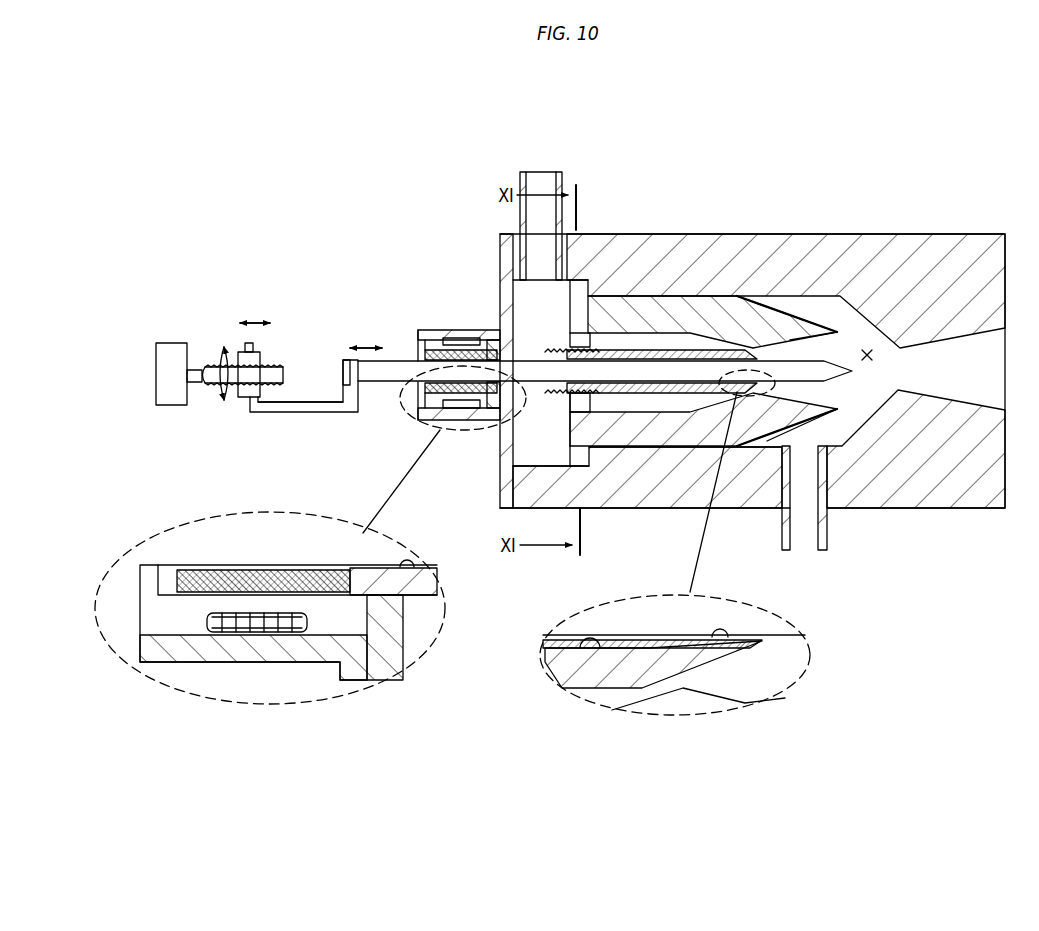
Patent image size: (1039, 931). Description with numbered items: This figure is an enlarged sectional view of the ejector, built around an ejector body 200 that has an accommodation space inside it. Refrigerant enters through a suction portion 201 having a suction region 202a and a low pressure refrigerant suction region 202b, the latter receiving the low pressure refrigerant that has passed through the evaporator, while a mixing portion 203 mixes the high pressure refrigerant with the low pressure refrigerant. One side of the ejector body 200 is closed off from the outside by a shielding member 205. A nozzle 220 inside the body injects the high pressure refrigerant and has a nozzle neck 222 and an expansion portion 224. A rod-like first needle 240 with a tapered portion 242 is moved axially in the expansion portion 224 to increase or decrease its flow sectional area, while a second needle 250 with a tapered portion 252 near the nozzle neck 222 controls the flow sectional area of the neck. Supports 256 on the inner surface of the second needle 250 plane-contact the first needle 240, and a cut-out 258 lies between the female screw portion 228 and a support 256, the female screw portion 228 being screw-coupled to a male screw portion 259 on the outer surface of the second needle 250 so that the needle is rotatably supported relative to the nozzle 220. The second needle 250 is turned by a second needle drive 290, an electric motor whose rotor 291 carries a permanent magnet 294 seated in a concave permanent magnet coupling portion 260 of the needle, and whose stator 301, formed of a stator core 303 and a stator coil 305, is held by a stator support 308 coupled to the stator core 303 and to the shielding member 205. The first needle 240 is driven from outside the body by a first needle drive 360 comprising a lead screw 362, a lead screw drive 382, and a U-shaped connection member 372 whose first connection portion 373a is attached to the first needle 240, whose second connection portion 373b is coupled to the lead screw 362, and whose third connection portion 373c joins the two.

The ejector body 200 is at (950, 226).
The suction portion 201 is at (903, 80).
The suction region 202a is at (575, 186).
The low pressure refrigerant suction region 202b is at (830, 552).
The mixing portion 203 is at (867, 350).
The shielding member 205 is at (503, 257).
The nozzle 220 is at (695, 305).
The nozzle neck 222 is at (753, 413).
The expansion portion 224 is at (800, 405).
The female screw portion 228 is at (604, 425).
The first needle 240 is at (410, 360).
The tapered portion 242 is at (841, 358).
The second needle 250 is at (527, 349).
The tapered portion 252 is at (760, 348).
The support 256 is at (180, 565).
The cut-out 258 is at (417, 560).
The male screw portion 259 is at (598, 402).
The permanent magnet coupling portion 260 is at (385, 607).
The second needle drive 290 is at (335, 795).
The rotor 291 is at (188, 600).
The permanent magnet 294 is at (173, 596).
The stator 301 is at (253, 701).
The stator core 303 is at (260, 655).
The stator coil 305 is at (215, 662).
The stator support 308 is at (337, 675).
The first needle drive 360 is at (252, 246).
The lead screw 362 is at (211, 356).
The connection member 372 is at (242, 344).
The first connection portion 373a is at (352, 402).
The second connection portion 373b is at (249, 406).
The third connection portion 373c is at (310, 414).
The lead screw drive 382 is at (158, 339).